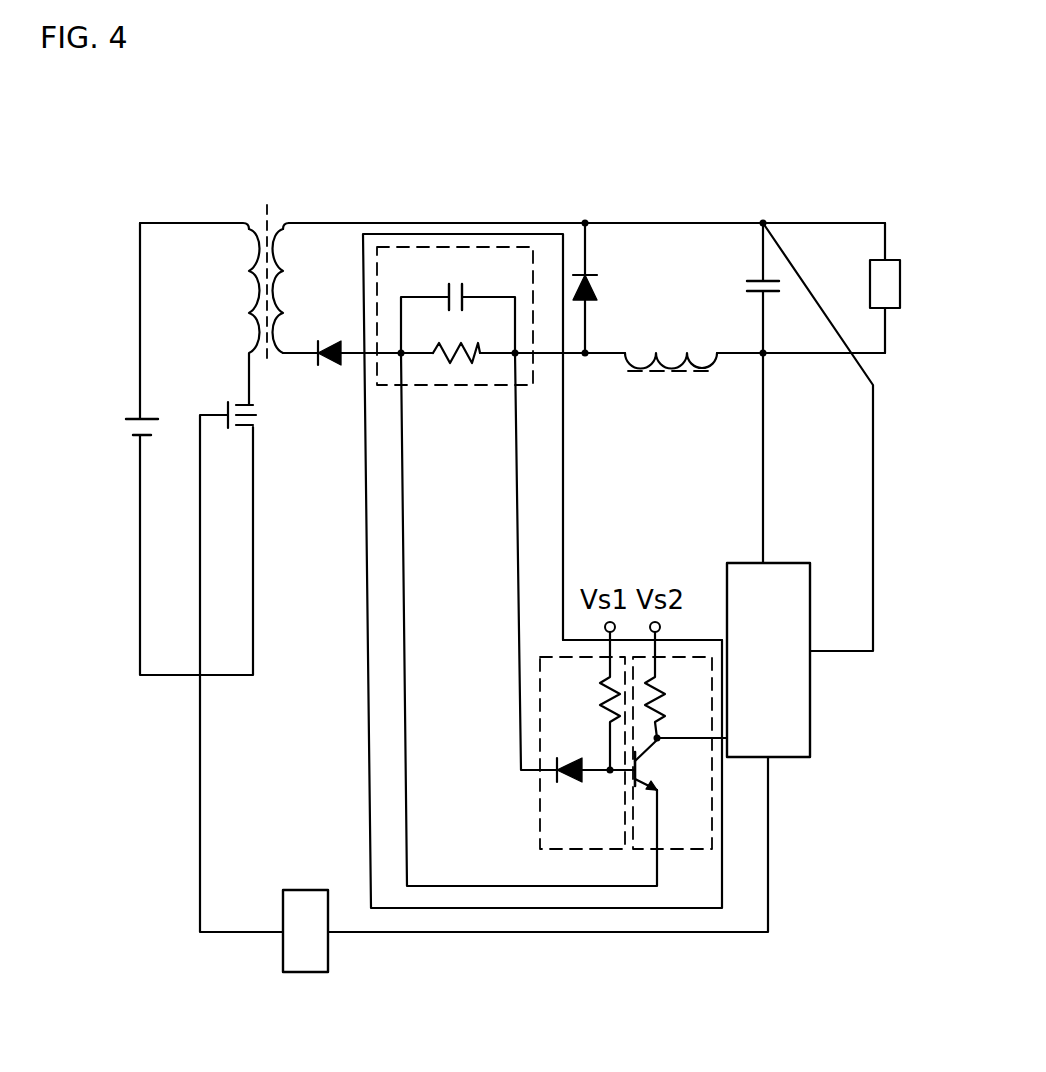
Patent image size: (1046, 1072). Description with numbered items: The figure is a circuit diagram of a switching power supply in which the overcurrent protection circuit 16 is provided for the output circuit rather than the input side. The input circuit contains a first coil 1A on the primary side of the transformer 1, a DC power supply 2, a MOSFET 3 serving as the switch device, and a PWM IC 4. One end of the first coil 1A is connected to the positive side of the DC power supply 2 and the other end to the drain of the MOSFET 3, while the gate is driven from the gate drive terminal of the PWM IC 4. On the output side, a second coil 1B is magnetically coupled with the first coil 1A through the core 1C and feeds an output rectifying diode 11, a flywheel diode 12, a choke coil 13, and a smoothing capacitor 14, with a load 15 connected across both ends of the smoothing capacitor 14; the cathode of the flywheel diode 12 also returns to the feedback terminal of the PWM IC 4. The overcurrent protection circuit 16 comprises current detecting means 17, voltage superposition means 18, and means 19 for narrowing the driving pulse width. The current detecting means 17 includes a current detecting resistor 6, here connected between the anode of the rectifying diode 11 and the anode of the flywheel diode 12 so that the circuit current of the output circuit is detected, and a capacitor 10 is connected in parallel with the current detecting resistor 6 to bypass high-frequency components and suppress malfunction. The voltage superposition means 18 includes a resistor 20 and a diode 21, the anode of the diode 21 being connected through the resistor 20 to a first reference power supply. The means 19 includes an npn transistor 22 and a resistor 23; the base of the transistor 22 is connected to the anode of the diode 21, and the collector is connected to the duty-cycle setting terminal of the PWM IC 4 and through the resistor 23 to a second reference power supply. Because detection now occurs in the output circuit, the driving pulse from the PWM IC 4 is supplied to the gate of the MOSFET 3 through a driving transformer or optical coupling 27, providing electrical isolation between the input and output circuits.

The transformer 1 is at (265, 258).
The first coil 1A is at (226, 232).
The second coil 1B is at (296, 232).
The core 1C is at (262, 261).
The DC power supply 2 is at (128, 426).
The MOSFET 3 is at (258, 419).
The PWM IC 4 is at (800, 538).
The current detecting resistor 6 is at (462, 345).
The capacitor 10 is at (455, 288).
The output rectifying diode 11 is at (324, 370).
The flywheel diode 12 is at (597, 289).
The choke coil 13 is at (690, 378).
The smoothing capacitor 14 is at (738, 283).
The load 15 is at (901, 282).
The overcurrent protection circuit 16 is at (370, 719).
The current detecting means 17 is at (531, 368).
The voltage superposition means 18 is at (540, 826).
The means for narrowing a driving pulse width 19 is at (713, 850).
The resistor 20 is at (594, 701).
The diode 21 is at (585, 779).
The npn transistor 22 is at (674, 769).
The resistor 23 is at (672, 685).
The driving transformer or optical coupling 27 is at (330, 936).